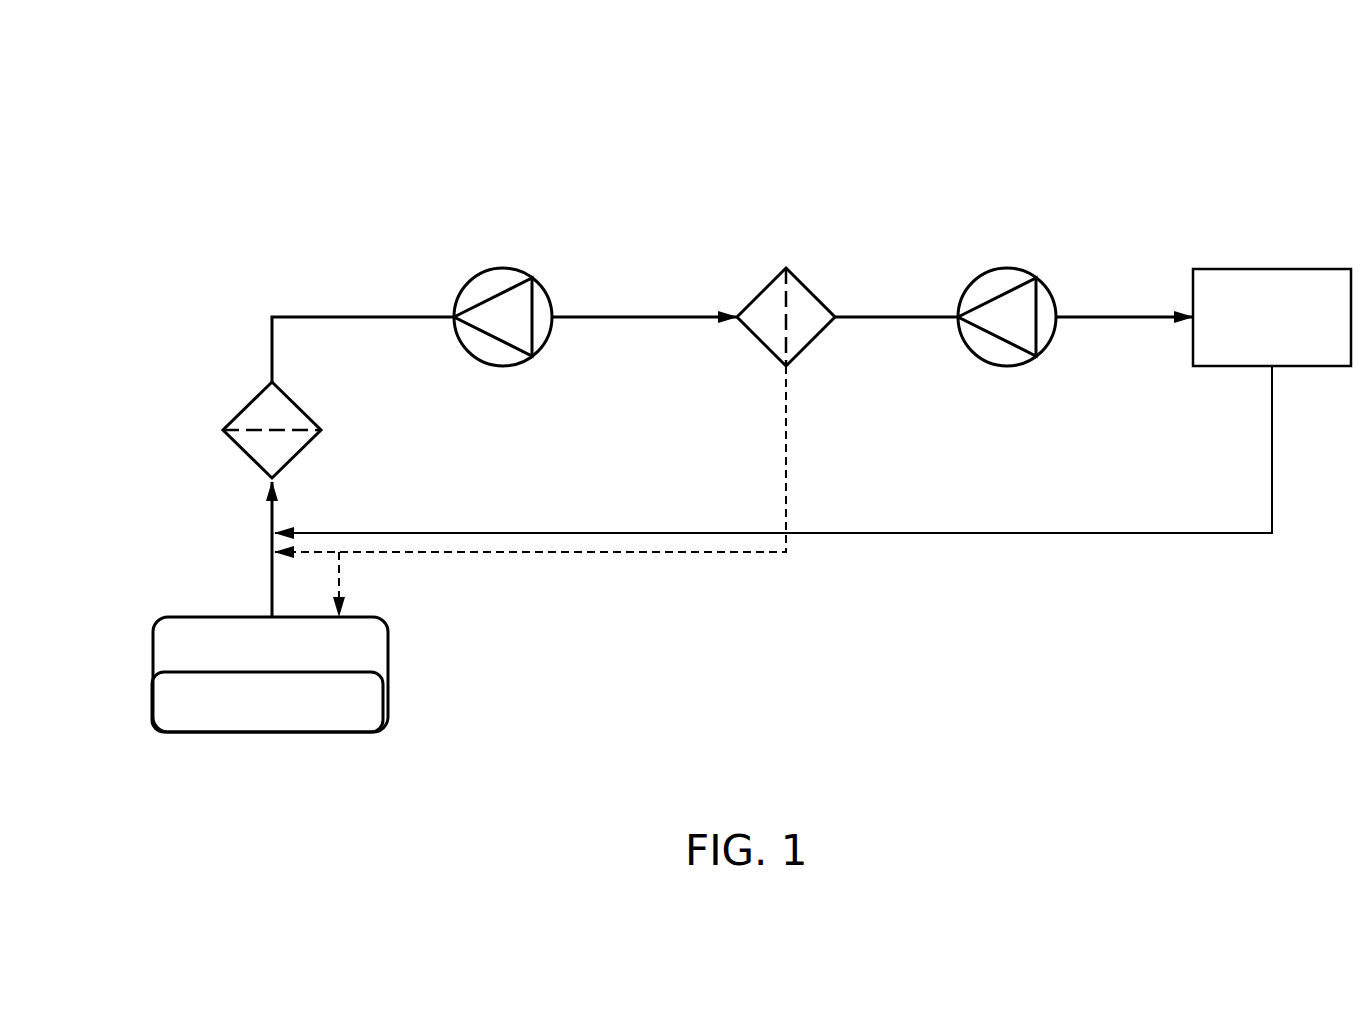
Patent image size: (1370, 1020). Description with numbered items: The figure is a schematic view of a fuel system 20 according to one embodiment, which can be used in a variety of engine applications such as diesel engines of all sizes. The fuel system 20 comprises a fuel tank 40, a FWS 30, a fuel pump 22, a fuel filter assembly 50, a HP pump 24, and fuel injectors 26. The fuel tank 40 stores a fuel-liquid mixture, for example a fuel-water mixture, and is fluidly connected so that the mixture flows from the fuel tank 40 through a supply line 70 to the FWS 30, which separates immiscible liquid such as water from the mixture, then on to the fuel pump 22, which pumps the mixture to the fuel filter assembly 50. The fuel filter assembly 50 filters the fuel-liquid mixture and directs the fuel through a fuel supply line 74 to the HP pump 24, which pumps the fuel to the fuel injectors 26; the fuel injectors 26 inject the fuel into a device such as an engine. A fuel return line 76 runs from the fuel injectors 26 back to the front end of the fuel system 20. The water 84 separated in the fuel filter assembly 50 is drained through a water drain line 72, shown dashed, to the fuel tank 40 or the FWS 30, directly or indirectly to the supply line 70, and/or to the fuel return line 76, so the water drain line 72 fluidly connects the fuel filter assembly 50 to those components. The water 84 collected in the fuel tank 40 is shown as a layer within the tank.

The fuel system 20 is at (1180, 130).
The fuel pump 22 is at (517, 258).
The HP pump 24 is at (1021, 258).
The fuel injectors 26 is at (1270, 268).
The FWS 30 is at (242, 453).
The fuel tank 40 is at (393, 638).
The fuel filter assembly 50 is at (815, 285).
The supply line 70 is at (333, 315).
The water drain line 72 is at (790, 450).
The fuel supply line 74 is at (898, 315).
The fuel return line 76 is at (975, 535).
The water 84 is at (362, 700).